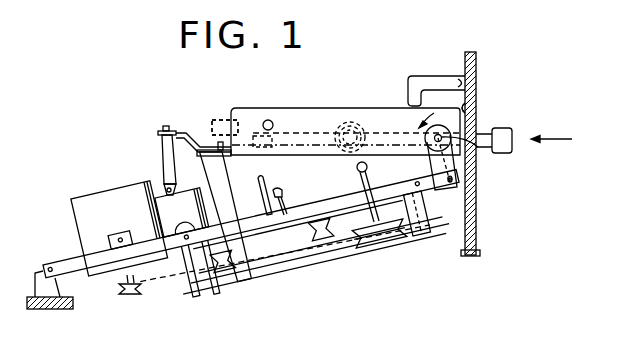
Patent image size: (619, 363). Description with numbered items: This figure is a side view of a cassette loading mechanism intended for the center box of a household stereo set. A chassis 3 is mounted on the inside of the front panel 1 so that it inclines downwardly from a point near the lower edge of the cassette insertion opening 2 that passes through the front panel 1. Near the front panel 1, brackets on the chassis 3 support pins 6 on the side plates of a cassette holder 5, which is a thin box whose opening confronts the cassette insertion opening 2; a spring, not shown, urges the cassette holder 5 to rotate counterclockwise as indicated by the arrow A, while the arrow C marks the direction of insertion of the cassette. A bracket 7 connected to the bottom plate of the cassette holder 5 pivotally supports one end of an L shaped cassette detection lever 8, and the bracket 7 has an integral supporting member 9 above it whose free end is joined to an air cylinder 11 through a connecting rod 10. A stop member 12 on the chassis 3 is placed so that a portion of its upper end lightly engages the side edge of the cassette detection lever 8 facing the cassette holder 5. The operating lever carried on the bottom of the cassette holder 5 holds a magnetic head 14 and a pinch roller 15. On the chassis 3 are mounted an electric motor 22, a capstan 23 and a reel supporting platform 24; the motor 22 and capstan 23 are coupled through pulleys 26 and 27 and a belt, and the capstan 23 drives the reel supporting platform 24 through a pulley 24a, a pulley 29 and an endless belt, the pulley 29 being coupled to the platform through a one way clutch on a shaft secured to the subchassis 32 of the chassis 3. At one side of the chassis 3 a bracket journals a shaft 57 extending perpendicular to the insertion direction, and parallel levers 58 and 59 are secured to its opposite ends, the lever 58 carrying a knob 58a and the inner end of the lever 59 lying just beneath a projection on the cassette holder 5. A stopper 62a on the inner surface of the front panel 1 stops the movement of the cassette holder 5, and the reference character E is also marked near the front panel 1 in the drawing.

The front panel 1 is at (477, 60).
The cassette insertion opening 2 is at (477, 112).
The chassis 3 is at (73, 272).
The cassette holder 5 is at (306, 110).
The pins 6 is at (474, 143).
The bracket 7 is at (202, 157).
The cassette detection lever 8 is at (196, 142).
The supporting member 9 is at (166, 127).
The connecting rod 10 is at (162, 151).
The air cylinder 11 is at (170, 208).
The stop member 12 is at (226, 191).
The magnetic head 14 is at (215, 119).
The pinch roller 15 is at (225, 127).
The electric motor 22 is at (90, 197).
The capstan 23 is at (263, 178).
The reel supporting platform 24 is at (371, 179).
The pulley 24a is at (271, 263).
The pulley 26 is at (129, 294).
The pulley 27 is at (250, 265).
The pulley 29 is at (391, 241).
The subchassis 32 is at (316, 266).
The shaft 57 is at (348, 125).
The lever 58 is at (380, 135).
The knob 58a is at (513, 143).
The lever 59 is at (300, 133).
The stopper 62a is at (409, 105).
The arrow A is at (414, 119).
The arrow C is at (560, 139).
The arrow E is at (502, 103).